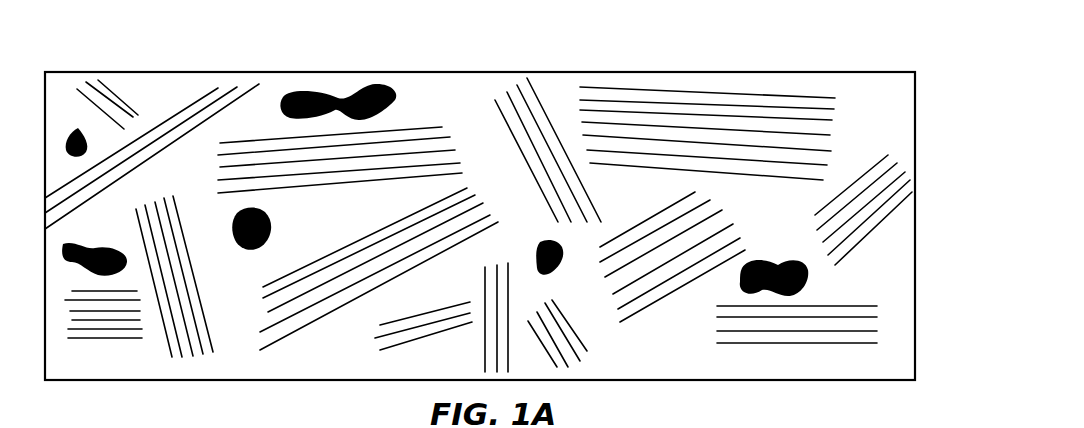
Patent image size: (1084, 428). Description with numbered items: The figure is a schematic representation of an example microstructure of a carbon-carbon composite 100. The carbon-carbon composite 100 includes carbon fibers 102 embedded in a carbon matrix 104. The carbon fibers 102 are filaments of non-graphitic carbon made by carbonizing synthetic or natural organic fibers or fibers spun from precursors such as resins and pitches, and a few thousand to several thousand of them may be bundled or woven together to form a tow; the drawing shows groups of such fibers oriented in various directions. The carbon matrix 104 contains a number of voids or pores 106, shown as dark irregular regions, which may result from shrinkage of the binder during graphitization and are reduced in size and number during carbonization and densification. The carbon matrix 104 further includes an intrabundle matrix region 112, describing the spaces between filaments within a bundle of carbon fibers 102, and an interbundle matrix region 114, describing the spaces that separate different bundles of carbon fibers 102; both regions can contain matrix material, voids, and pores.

The carbon-carbon composite 100 is at (166, 63).
The carbon fibers 102 is at (540, 93).
The carbon matrix 104 is at (463, 117).
The pores 106 is at (320, 90).
The intrabundle matrix region 112 is at (817, 128).
The interbundle matrix region 114 is at (862, 277).